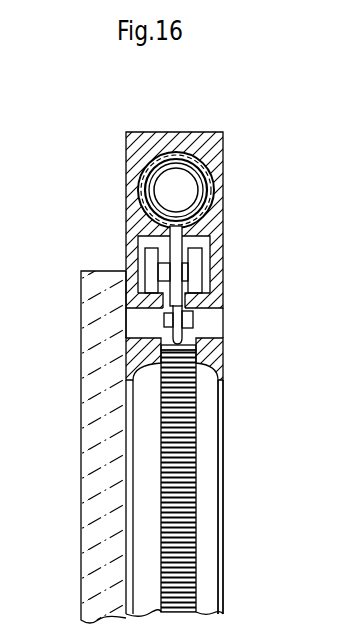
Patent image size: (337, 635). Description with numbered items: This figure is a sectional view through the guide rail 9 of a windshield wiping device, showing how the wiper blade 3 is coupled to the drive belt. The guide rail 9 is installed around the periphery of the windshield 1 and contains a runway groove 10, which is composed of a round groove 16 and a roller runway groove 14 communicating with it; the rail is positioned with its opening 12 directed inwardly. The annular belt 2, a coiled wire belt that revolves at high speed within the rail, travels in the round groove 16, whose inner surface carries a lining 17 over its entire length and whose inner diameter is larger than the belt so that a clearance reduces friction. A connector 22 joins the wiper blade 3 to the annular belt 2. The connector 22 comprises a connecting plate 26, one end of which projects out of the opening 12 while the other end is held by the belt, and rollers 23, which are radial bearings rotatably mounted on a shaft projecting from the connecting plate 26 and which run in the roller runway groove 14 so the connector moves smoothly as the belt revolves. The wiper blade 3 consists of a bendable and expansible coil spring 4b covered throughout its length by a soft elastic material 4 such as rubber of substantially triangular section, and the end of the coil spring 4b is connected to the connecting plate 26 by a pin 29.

The windshield 1 is at (100, 446).
The annular belt 2 is at (186, 191).
The wiper blade 3 is at (210, 418).
The soft elastic material 4 is at (226, 470).
The coil spring 4b is at (197, 508).
The guide rail 9 is at (223, 147).
The runway groove 10 is at (148, 178).
The opening 12 is at (127, 312).
The roller runway groove 14 is at (147, 242).
The round groove 16 is at (180, 156).
The lining 17 is at (166, 160).
The connector 22 is at (177, 248).
The rollers 23 is at (193, 272).
The connecting plate 26 is at (190, 295).
The pin 29 is at (193, 321).